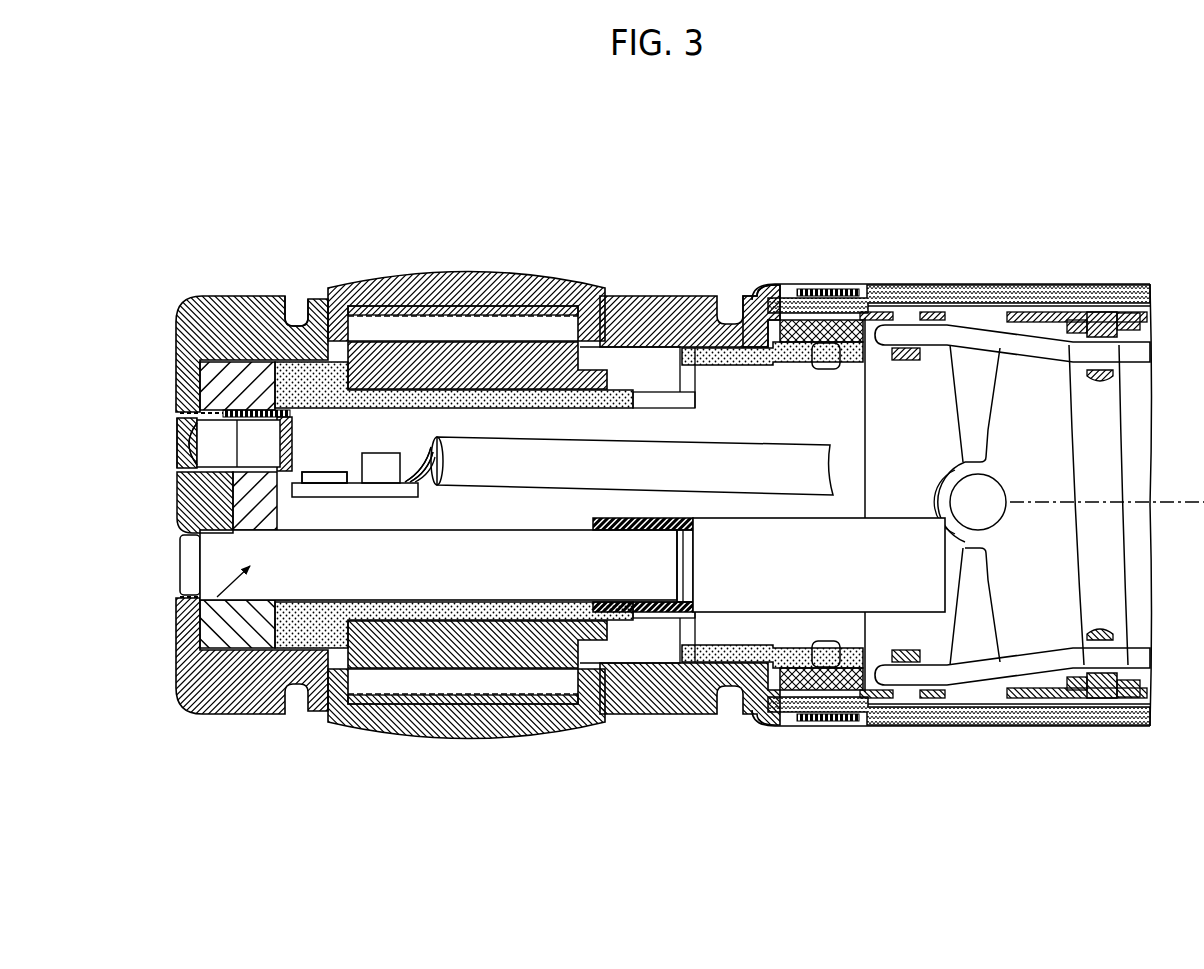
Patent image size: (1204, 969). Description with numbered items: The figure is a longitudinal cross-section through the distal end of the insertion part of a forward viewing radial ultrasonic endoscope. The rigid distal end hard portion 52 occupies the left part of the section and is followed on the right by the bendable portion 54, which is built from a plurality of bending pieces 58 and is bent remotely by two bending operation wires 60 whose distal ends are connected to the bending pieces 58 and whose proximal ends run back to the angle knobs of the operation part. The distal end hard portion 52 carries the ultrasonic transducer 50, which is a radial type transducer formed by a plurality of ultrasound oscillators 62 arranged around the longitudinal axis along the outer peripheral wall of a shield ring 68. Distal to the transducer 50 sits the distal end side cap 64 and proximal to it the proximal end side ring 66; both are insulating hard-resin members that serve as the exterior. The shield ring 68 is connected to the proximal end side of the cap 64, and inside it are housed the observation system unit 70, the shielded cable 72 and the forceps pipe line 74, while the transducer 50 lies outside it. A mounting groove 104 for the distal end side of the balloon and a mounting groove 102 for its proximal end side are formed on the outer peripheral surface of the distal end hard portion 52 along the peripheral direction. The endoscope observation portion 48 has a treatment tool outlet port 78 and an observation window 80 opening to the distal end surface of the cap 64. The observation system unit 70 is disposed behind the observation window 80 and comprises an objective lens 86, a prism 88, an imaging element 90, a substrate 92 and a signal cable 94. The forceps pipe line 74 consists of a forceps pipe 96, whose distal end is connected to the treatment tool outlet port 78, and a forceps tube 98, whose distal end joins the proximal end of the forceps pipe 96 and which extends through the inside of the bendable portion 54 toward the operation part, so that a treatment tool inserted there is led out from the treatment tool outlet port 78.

The endoscope observation portion 48 is at (180, 298).
The ultrasonic transducer 50 is at (518, 257).
The distal end hard portion 52 is at (400, 258).
The bendable portion 54 is at (1062, 282).
The bending pieces 58 is at (1050, 470).
The bending operation wires 60 is at (1150, 354).
The ultrasound oscillators 62 is at (465, 326).
The distal end side cap 64 is at (216, 314).
The proximal end side ring 66 is at (660, 305).
The shield ring 68 is at (620, 397).
The observation system unit 70 is at (206, 429).
The shielded cable 72 is at (744, 452).
The forceps pipe line 74 is at (200, 623).
The treatment tool outlet port 78 is at (190, 567).
The observation window 80 is at (182, 452).
The objective lens 86 is at (183, 434).
The prism 88 is at (338, 473).
The imaging element 90 is at (348, 471).
The substrate 92 is at (312, 512).
The signal cable 94 is at (422, 482).
The forceps pipe 96 is at (455, 567).
The forceps tube 98 is at (912, 563).
The mounting groove 102 is at (738, 318).
The mounting groove 104 is at (298, 318).